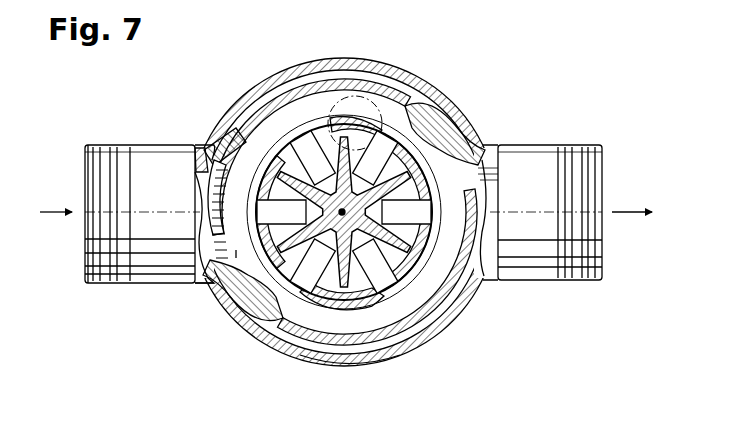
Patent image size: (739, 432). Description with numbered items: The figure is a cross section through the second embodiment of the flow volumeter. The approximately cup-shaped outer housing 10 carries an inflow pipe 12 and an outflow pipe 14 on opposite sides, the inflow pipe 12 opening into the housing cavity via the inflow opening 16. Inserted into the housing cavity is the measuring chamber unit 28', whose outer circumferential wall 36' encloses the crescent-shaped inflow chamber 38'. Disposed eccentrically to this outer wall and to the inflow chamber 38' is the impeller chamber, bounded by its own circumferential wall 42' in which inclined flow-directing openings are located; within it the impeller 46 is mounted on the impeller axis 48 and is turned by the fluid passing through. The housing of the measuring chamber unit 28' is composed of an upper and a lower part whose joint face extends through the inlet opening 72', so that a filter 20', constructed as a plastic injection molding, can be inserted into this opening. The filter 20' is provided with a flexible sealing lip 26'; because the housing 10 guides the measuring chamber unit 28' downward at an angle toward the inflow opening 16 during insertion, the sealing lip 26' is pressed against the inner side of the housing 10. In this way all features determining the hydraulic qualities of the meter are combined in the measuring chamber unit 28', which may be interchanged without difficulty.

The outer housing 10 is at (306, 56).
The inflow pipe 12 is at (138, 163).
The outflow pipe 14 is at (540, 160).
The inflow opening 16 is at (193, 252).
The filter 20' is at (164, 247).
The flexible sealing lip 26' is at (175, 132).
The measuring chamber unit 28' is at (369, 376).
The outer circumferential wall 36' is at (344, 190).
The inflow chamber 38' is at (232, 322).
The circumferential wall of impeller chamber 42' is at (462, 128).
The impeller 46 is at (323, 297).
The impeller axis 48 is at (434, 231).
The inlet opening 72' is at (292, 115).